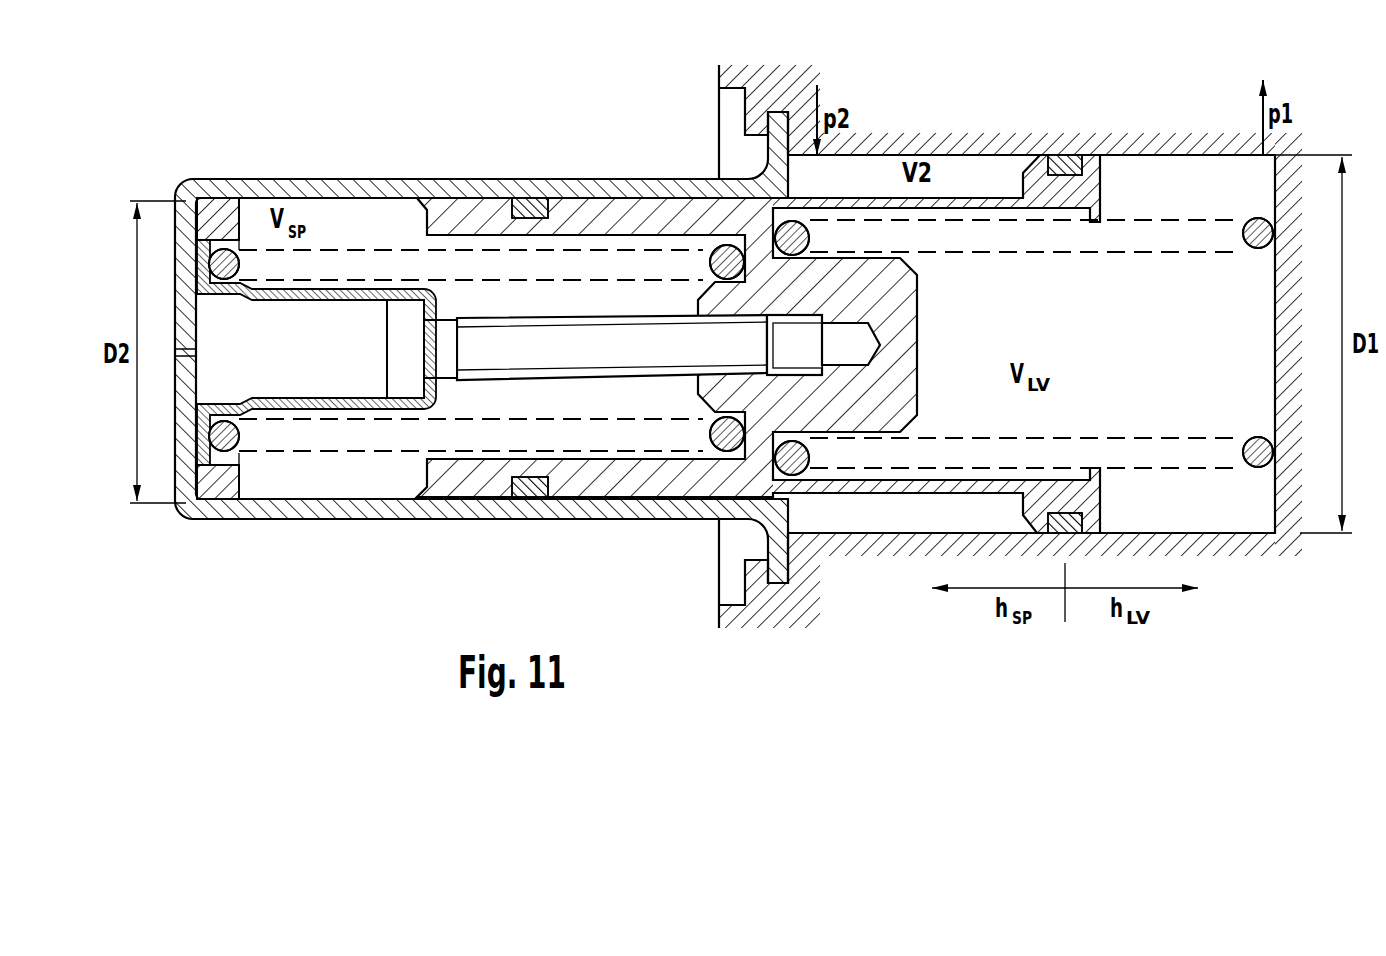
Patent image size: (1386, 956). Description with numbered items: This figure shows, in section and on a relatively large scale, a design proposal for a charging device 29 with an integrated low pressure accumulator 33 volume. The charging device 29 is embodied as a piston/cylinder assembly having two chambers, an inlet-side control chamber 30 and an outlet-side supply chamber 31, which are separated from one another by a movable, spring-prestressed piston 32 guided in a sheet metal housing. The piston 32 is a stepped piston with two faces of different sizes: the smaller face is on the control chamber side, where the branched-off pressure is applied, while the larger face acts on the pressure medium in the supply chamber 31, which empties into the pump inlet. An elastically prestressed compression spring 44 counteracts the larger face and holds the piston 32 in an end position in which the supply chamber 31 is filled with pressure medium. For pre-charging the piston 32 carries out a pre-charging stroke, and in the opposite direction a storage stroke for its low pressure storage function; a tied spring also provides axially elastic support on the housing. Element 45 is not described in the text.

The charging device 29 is at (593, 125).
The control chamber 30 is at (998, 176).
The supply chamber 31 is at (1160, 315).
The piston 32 is at (755, 245).
The low pressure accumulator 33 is at (404, 467).
The compression spring 44 is at (1263, 470).
The guide insert 45 is at (333, 268).